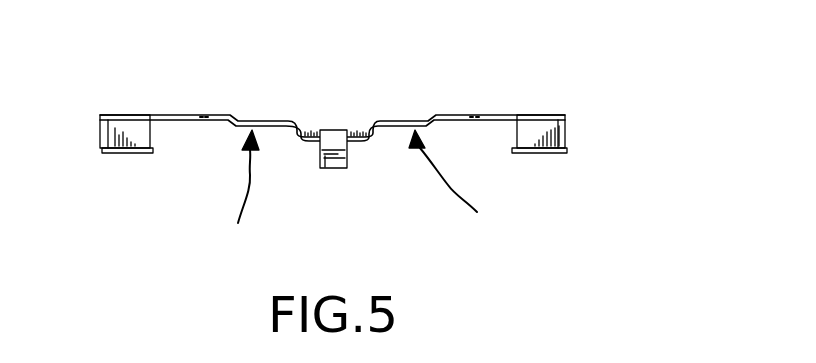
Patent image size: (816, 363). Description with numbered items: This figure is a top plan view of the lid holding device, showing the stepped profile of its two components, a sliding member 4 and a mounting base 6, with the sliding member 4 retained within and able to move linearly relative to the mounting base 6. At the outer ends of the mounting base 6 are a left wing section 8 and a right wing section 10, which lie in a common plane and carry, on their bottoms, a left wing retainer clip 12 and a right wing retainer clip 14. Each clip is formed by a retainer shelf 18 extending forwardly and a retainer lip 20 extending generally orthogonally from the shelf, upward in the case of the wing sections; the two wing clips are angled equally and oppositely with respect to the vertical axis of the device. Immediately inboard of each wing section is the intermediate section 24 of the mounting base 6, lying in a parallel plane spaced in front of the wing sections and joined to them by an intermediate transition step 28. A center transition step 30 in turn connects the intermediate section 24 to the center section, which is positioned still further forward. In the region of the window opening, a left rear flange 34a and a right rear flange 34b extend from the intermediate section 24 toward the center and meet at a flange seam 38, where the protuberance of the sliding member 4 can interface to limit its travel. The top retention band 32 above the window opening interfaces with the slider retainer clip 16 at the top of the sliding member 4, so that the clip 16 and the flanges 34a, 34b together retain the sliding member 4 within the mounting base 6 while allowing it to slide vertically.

The sliding member 4 is at (378, 126).
The mounting base 6 is at (273, 121).
The left wing section 8 is at (178, 116).
The right wing section 10 is at (480, 114).
The left wing retainer clip 12 is at (100, 133).
The right wing retainer clip 14 is at (566, 130).
The slider retainer clip 16 is at (345, 166).
The retainer shelf 18 is at (100, 140).
The retainer lip 20 is at (135, 153).
The intermediate section 24 is at (361, 195).
The intermediate transition step 28 is at (233, 126).
The center transition step 30 is at (292, 136).
The top retention band 32 is at (349, 156).
The left rear flange 34a is at (310, 121).
The right rear flange 34b is at (363, 126).
The flange seam 38 is at (336, 126).